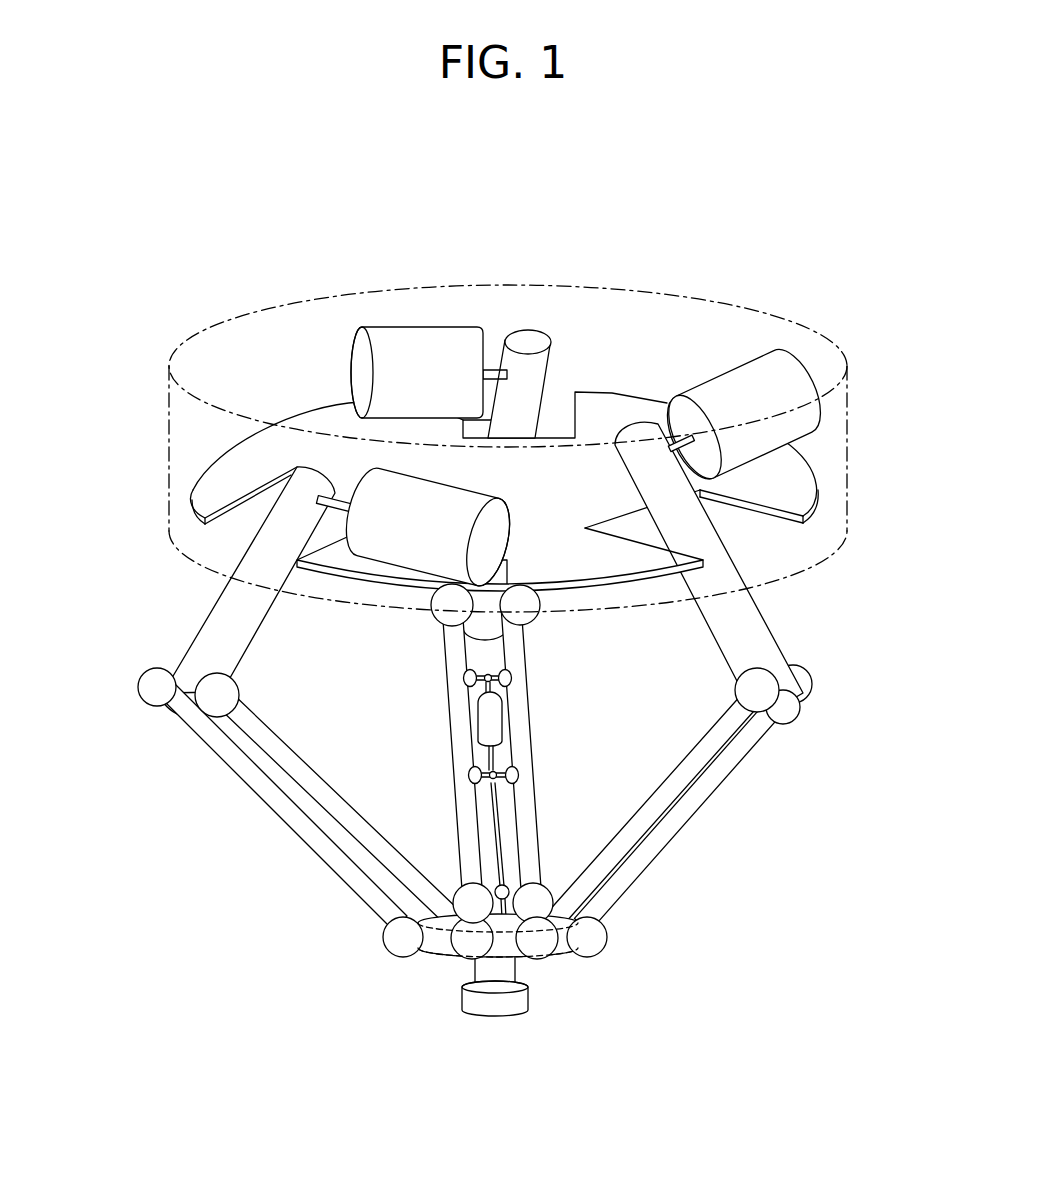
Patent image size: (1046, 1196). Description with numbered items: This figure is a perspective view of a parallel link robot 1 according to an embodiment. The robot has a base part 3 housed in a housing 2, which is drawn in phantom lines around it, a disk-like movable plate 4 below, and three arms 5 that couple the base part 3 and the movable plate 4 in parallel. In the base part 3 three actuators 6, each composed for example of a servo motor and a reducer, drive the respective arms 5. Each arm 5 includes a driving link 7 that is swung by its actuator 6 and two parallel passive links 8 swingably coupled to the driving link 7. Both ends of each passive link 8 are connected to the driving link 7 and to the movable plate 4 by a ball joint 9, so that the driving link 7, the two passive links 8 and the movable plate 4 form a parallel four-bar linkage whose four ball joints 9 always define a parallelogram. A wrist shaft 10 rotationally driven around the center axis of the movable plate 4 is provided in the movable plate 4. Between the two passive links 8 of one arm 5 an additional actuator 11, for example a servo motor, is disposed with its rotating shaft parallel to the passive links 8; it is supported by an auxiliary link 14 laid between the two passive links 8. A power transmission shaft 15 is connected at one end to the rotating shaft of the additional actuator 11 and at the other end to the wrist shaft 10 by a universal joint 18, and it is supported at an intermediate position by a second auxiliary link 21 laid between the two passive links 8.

The parallel link robot 1 is at (496, 610).
The housing 2 is at (172, 428).
The base part 3 is at (613, 406).
The movable plate 4 is at (568, 956).
The arm 5 is at (150, 630).
The actuator 6 is at (414, 338).
The driving link 7 is at (480, 479).
The passive link 8 is at (458, 722).
The ball joint 9 is at (150, 678).
The wrist shaft 10 is at (497, 1005).
The additional actuator 11 is at (502, 713).
The auxiliary link 14 is at (504, 664).
The power transmission shaft 15 is at (497, 790).
The universal joint 18 is at (507, 885).
The auxiliary link 21 is at (480, 787).